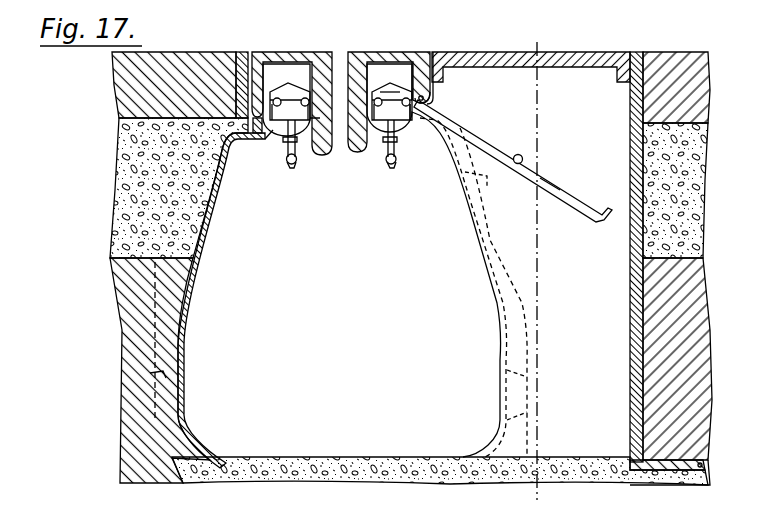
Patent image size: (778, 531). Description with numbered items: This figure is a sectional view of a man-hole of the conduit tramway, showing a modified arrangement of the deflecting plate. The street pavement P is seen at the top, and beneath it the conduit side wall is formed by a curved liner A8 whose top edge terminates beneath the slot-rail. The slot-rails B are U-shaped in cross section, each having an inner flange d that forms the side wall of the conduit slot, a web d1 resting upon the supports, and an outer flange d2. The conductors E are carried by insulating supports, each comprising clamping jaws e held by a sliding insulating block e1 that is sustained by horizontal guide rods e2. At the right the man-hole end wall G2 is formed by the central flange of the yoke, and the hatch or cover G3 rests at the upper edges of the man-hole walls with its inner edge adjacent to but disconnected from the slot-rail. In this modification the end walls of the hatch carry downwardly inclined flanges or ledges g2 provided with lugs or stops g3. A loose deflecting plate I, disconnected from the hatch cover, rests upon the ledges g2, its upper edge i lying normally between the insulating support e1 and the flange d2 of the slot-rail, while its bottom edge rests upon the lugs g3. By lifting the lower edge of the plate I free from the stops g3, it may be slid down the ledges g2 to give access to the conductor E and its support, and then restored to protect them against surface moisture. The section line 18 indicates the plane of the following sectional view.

The street pavement P is at (690, 62).
The end wall of the man-hole G2 is at (635, 261).
The hatch or cover G3 is at (566, 64).
The liner A8 is at (195, 257).
The slot-rail B is at (285, 56).
The inner flange d is at (342, 150).
The web d1 is at (410, 62).
The outer flange d2 is at (433, 78).
The conductor E is at (292, 166).
The clamping jaws e is at (297, 153).
The insulating block e1 is at (388, 95).
The guide rods e2 is at (403, 118).
The upper edge of deflecting plate i is at (420, 96).
The deflecting plate I is at (476, 134).
The ledges g2 is at (552, 181).
The lugs or stops g3 is at (524, 161).
The section line 18— 18 is at (537, 276).